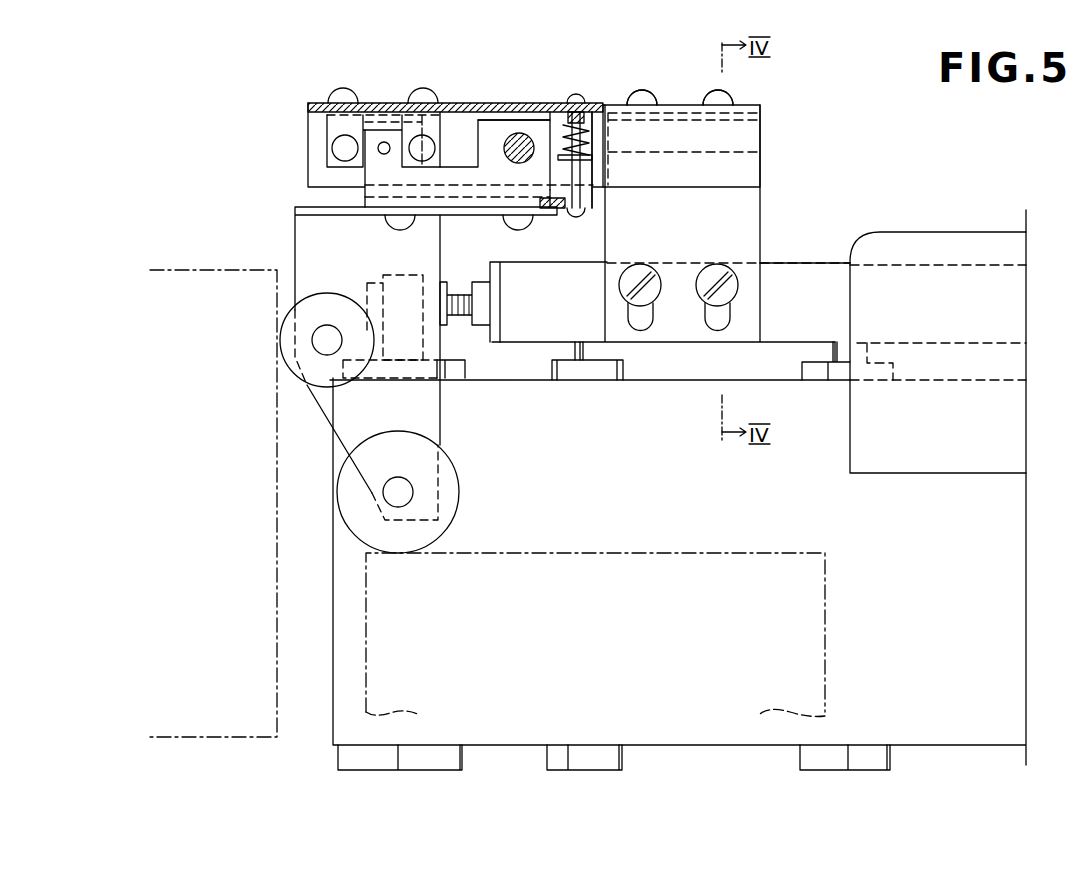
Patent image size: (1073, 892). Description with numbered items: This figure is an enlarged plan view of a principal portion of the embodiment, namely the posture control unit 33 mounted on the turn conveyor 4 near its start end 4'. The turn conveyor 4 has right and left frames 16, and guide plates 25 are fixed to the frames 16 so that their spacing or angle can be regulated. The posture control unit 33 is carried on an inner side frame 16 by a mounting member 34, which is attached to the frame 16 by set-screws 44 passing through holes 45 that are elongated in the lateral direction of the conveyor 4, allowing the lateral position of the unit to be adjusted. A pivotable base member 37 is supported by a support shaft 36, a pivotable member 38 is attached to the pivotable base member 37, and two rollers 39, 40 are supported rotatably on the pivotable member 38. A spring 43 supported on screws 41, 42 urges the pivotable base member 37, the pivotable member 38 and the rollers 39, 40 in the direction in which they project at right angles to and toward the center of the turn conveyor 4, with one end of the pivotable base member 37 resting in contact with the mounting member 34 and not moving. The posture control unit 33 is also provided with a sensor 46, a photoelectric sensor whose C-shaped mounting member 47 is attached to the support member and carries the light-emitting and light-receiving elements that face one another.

The turn conveyor 4 is at (701, 490).
The start end 4' is at (486, 503).
The frame 16 is at (823, 285).
The guide plate 25 is at (947, 243).
The posture control unit 33 is at (275, 190).
The mounting member 34 is at (452, 100).
The support shaft 36 is at (514, 133).
The pivotable base member 37 is at (530, 125).
The pivotable member 38 is at (313, 235).
The roller 39 is at (347, 495).
The roller 40 is at (280, 337).
The screw 41 is at (577, 98).
The screw 42 is at (573, 217).
The spring 43 is at (598, 110).
The set-screw 44 is at (642, 270).
The hole 45 is at (645, 325).
The sensor 46 is at (643, 98).
The C-shaped mounting member 47 is at (338, 131).